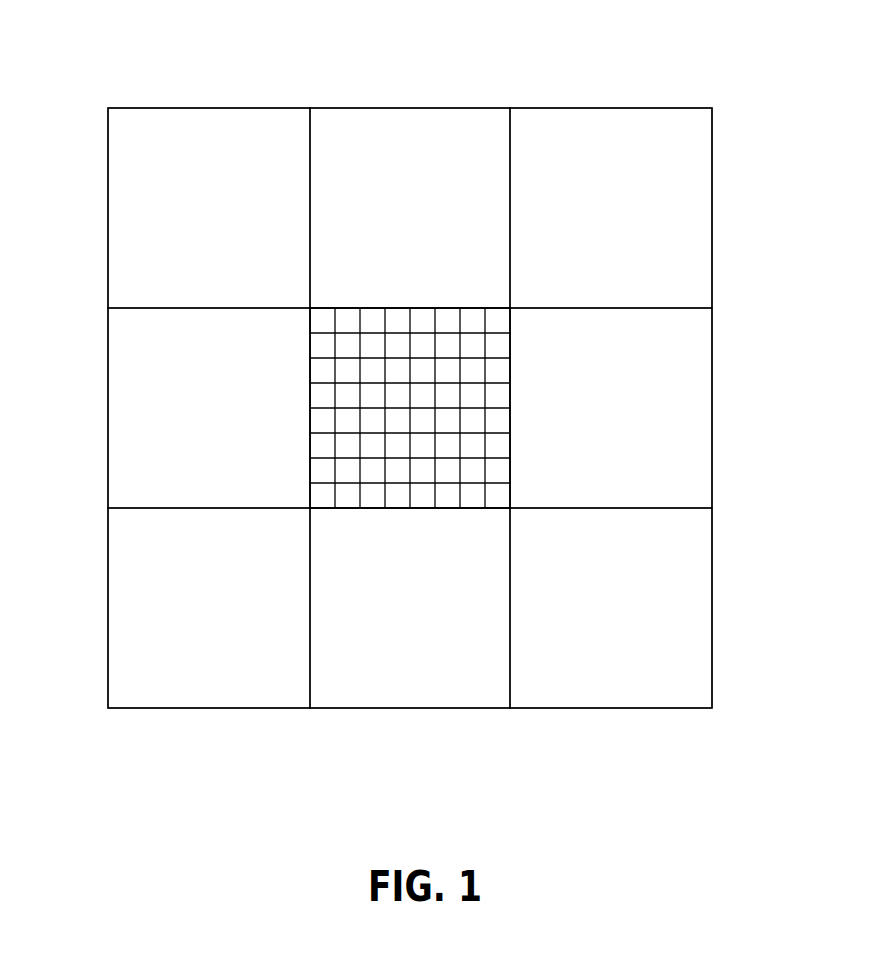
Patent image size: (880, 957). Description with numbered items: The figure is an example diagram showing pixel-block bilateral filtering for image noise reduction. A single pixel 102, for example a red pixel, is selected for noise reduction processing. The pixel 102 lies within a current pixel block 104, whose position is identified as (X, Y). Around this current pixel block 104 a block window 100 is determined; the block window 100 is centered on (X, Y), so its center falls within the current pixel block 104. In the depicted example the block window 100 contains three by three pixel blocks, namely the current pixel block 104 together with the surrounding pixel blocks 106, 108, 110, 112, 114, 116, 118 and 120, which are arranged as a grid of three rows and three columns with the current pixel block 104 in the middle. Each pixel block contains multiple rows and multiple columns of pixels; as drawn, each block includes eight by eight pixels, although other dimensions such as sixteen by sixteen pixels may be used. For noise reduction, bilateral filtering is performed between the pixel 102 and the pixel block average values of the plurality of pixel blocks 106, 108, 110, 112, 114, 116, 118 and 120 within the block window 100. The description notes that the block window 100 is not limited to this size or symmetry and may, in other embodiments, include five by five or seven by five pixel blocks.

The block window 100 is at (107, 73).
The pixel 102 is at (370, 370).
The current pixel block 104 is at (510, 320).
The pixel block 106 is at (185, 126).
The pixel block 108 is at (410, 123).
The pixel block 110 is at (682, 138).
The pixel block 112 is at (127, 398).
The pixel block 114 is at (683, 390).
The pixel block 116 is at (142, 628).
The pixel block 118 is at (350, 693).
The pixel block 120 is at (683, 613).